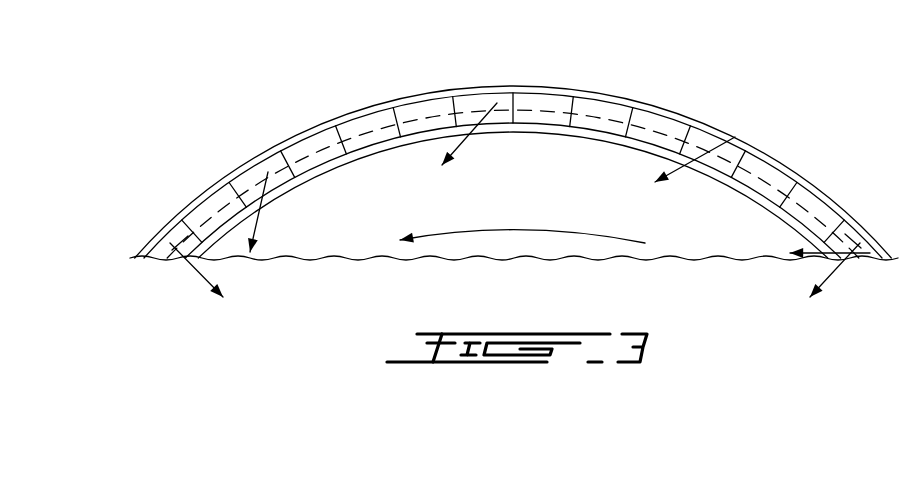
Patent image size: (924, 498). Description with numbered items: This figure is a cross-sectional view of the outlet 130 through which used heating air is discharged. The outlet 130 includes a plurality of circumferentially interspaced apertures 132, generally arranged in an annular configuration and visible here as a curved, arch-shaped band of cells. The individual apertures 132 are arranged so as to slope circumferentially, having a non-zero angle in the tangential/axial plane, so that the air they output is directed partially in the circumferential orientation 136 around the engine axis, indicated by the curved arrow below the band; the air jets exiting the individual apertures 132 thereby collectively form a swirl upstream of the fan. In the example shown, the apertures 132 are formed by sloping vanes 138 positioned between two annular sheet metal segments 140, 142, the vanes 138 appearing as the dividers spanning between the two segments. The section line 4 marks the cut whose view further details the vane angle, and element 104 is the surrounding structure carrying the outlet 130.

The substrate 104 is at (592, 137).
The outlet 130 is at (760, 183).
The apertures 132 is at (427, 110).
The circumferential orientation 136 is at (522, 275).
The sloping vanes 138 is at (583, 105).
The annular sheet metal segment 140 is at (262, 162).
The annular sheet metal segment 142 is at (202, 200).
The section line 4- 4 is at (520, 280).